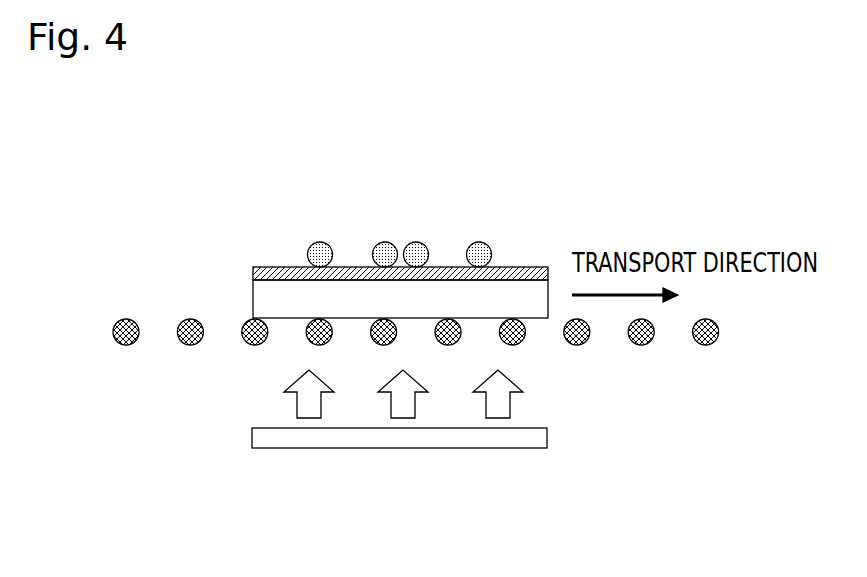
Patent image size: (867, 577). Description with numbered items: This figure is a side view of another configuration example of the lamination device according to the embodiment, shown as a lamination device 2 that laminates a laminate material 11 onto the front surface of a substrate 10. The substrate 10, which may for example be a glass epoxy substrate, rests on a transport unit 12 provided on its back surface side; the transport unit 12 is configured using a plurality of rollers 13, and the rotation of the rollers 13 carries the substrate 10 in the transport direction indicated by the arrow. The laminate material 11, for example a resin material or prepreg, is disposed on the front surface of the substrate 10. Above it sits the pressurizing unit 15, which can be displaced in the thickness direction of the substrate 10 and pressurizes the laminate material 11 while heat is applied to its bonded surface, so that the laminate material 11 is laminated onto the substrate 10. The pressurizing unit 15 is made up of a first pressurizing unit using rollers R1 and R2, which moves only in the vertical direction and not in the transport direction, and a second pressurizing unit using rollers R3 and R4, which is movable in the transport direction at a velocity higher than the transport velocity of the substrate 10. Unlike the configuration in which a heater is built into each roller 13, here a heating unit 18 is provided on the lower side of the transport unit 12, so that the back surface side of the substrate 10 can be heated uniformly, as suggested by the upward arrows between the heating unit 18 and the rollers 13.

The lamination device 2 is at (578, 153).
The substrate 10 is at (253, 295).
The laminate material 11 is at (253, 268).
The transport unit 12 is at (404, 396).
The roller 13 is at (122, 345).
The pressurizing unit 15 is at (333, 196).
The heating unit 18 is at (373, 439).
The roller R1 is at (320, 237).
The roller R2 is at (382, 237).
The roller R3 is at (418, 237).
The roller R4 is at (479, 237).